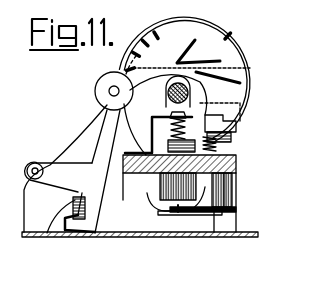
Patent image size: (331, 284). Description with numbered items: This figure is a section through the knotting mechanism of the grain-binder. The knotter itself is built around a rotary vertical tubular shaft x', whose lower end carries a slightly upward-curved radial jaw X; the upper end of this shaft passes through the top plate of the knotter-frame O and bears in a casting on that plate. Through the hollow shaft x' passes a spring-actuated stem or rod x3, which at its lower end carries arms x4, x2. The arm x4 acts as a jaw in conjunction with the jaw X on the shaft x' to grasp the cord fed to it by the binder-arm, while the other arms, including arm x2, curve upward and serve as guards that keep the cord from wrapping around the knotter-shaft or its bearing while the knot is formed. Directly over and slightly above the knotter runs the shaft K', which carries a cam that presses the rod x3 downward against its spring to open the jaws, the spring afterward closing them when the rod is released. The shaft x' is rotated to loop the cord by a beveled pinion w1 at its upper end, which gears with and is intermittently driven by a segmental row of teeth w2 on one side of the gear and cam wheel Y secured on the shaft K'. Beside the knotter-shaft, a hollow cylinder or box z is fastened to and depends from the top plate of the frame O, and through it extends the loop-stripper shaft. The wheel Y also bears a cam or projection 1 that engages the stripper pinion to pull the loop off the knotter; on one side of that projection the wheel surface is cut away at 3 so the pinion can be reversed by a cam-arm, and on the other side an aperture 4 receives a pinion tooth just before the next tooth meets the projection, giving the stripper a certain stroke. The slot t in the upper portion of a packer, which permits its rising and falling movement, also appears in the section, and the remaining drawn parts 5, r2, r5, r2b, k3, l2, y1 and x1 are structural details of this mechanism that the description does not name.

The gear and cam wheel y is at (228, 58).
The segmental row of teeth w2 is at (120, 65).
The index mark 5 is at (133, 84).
The aperture 4 is at (208, 61).
The sector arm r2 is at (178, 56).
The cam or projection 1 is at (243, 60).
The pulley r5 is at (114, 91).
The connecting bar r2b is at (104, 150).
The slot t is at (127, 235).
The shaft K is at (169, 115).
The cut-away 3 is at (220, 111).
The bracket k3 is at (163, 133).
The beveled pinion w1 is at (175, 132).
The second spring l2 is at (238, 128).
The rotary vertical tubular shaft x' is at (248, 137).
The spring-actuated stem or rod x3 is at (226, 134).
The frame O is at (238, 167).
The contact spring y1 is at (216, 199).
The arm x2 is at (233, 204).
The contact spring x1 is at (177, 208).
The radial jaw x is at (152, 216).
The arm x4 is at (185, 205).
The hollow cylinder or box z is at (193, 233).